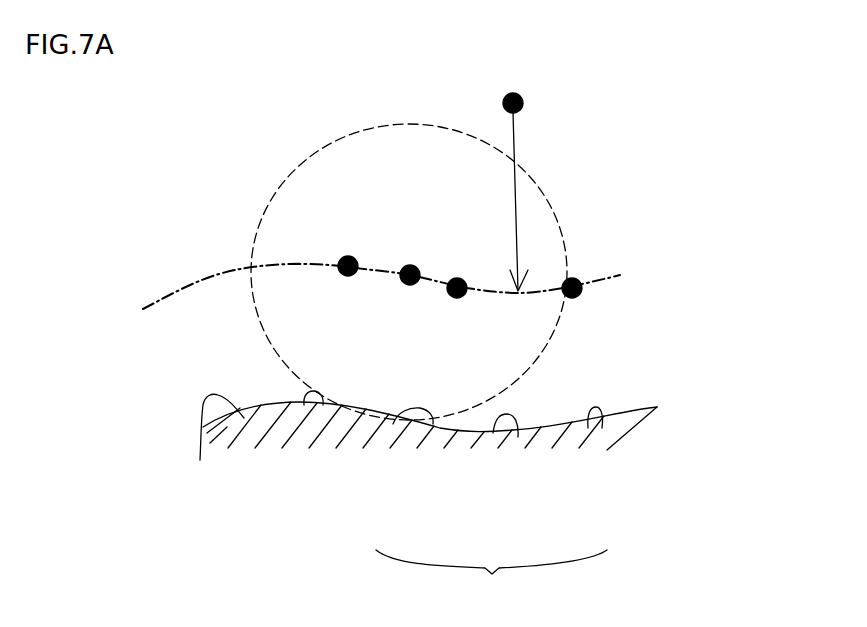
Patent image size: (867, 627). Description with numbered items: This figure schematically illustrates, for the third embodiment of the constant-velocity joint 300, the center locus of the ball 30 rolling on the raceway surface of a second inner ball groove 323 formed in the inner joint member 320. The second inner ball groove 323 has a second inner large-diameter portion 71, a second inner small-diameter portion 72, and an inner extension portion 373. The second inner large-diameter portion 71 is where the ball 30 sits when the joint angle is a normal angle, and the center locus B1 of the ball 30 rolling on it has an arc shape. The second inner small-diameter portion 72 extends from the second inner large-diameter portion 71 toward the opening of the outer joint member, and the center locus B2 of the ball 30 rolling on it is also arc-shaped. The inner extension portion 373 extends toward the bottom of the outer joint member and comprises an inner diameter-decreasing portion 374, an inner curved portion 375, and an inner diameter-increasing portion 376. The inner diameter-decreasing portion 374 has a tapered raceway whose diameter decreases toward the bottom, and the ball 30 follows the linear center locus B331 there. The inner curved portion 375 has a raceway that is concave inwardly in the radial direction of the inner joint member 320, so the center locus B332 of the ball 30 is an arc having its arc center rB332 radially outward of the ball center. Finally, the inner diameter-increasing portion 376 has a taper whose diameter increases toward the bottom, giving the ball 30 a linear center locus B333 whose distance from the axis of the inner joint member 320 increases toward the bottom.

The center locus of the ball rolling on the second inner large-diameter portion B1 is at (405, 272).
The center locus of the ball rolling on the second inner small-diameter portion B2 is at (232, 276).
The center locus of the ball rolling on the inner diameter-decreasing portion B331 is at (455, 288).
The arc center of center locus B332 rB332 is at (513, 103).
The center locus of the ball rolling on the inner curved portion B332 is at (535, 292).
The center locus of the ball rolling on the inner diameter-increasing portion B333 is at (582, 285).
The constant-velocity joint 300 is at (697, 222).
The ball 30 is at (562, 323).
The second inner ball groove 323 is at (359, 381).
The inner joint member 320 is at (178, 384).
The second inner small-diameter portion 72 is at (200, 460).
The second inner large-diameter portion 71 is at (323, 405).
The inner diameter-decreasing portion 374 is at (433, 424).
The inner curved portion 375 is at (518, 437).
The inner diameter-increasing portion 376 is at (588, 428).
The inner extension portion 373 is at (491, 578).